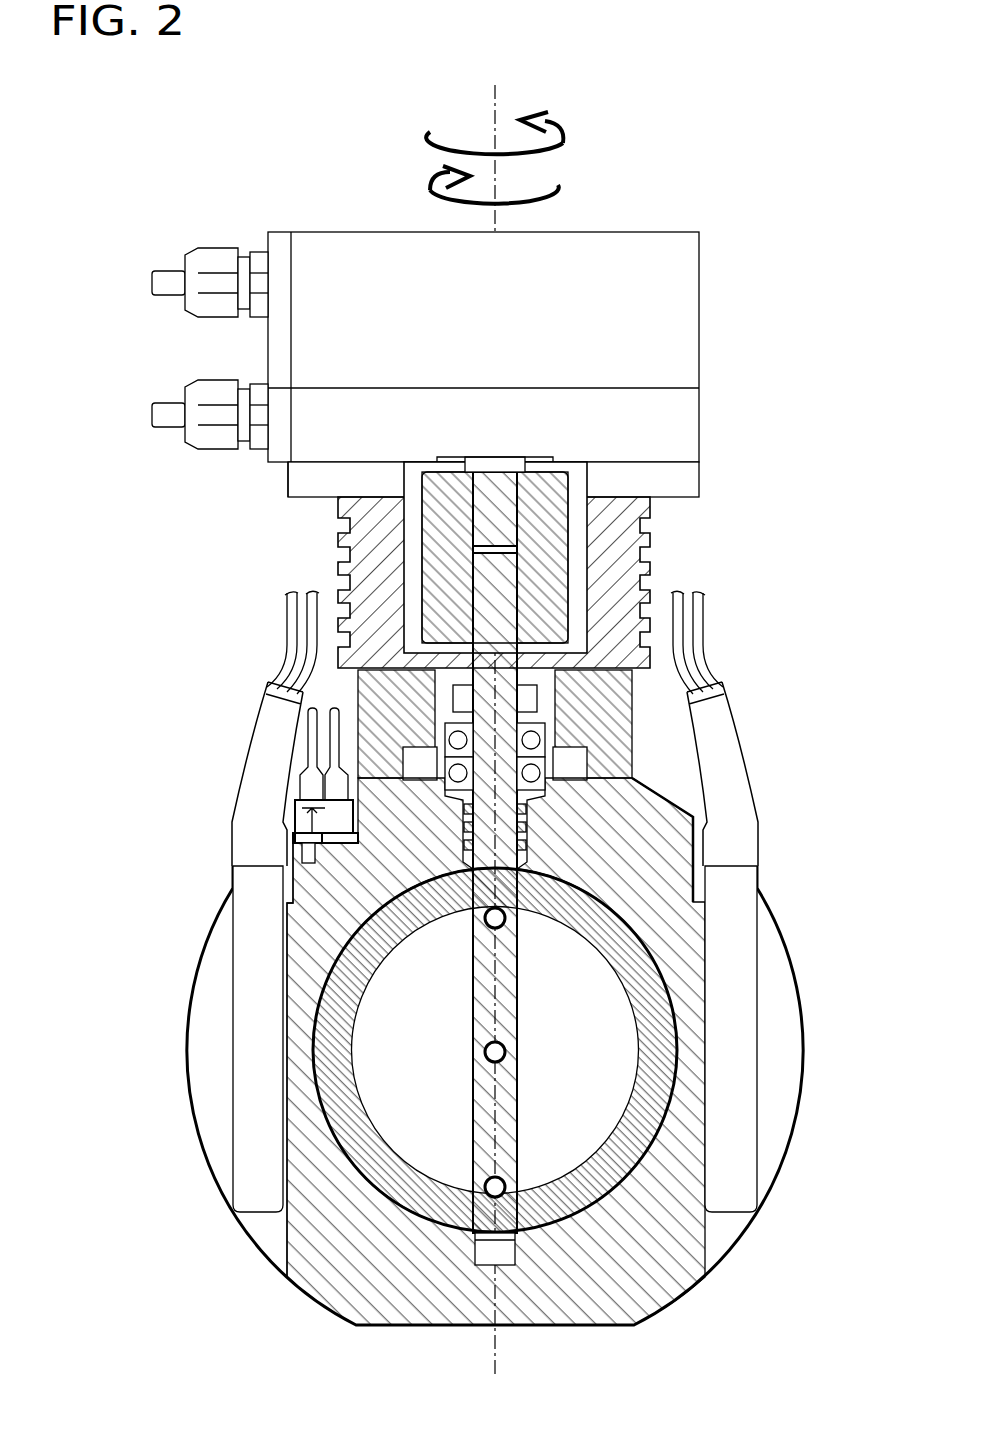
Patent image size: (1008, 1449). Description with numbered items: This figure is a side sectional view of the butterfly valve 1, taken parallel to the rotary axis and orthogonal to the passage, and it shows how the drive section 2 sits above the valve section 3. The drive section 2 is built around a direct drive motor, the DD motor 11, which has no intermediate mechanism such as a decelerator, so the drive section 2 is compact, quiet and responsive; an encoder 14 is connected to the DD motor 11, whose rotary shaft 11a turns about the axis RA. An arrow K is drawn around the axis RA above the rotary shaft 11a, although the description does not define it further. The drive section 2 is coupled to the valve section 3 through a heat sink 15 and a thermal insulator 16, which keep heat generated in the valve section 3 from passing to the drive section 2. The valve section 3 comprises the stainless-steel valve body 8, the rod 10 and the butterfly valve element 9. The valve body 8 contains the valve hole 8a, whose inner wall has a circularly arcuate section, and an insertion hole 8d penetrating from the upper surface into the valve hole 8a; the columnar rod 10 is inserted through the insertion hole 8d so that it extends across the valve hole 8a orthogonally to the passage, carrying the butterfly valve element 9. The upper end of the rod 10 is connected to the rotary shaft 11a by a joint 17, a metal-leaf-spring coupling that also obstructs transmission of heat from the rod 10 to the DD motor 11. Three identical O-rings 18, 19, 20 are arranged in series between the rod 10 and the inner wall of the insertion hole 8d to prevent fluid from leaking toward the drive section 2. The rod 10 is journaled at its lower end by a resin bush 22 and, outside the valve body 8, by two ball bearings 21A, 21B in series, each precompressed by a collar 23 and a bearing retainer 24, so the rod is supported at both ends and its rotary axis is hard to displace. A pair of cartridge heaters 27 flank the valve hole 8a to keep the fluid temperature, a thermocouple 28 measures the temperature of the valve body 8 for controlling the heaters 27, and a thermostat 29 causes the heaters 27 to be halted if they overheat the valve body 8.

The butterfly valve 1 is at (297, 153).
The drive section 2 is at (463, 302).
The valve section 3 is at (745, 688).
The valve body 8 is at (662, 837).
The valve hole 8a is at (655, 1080).
The insertion hole 8d is at (612, 908).
The butterfly valve element 9 is at (330, 1022).
The rod 10 is at (485, 1010).
The DD motor 11 is at (375, 253).
The rotary shaft 11a is at (507, 495).
The encoder 14 is at (680, 407).
The heat sink 15 is at (622, 553).
The thermal insulator 16 is at (603, 680).
The joint 17 is at (435, 593).
The O-ring 18 is at (350, 800).
The O-ring 19 is at (464, 827).
The O-ring 20 is at (464, 848).
The ball bearing 21A is at (560, 745).
The ball bearing 21B is at (545, 773).
The bush 22 is at (480, 1245).
The collar 23 is at (457, 697).
The bearing retainer 24 is at (437, 752).
The heater 27 is at (270, 1105).
The thermocouple 28 is at (295, 836).
The thermostat 29 is at (464, 808).
The axis RA is at (495, 108).
The rotation direction K is at (563, 143).